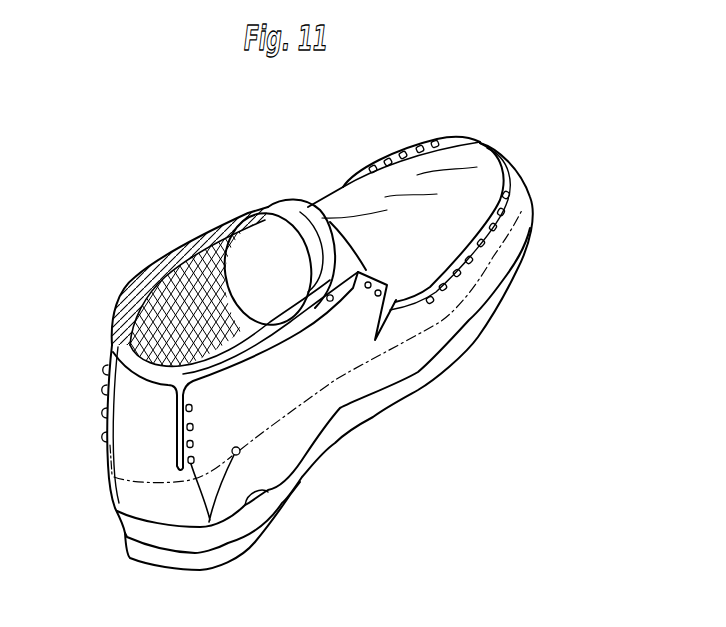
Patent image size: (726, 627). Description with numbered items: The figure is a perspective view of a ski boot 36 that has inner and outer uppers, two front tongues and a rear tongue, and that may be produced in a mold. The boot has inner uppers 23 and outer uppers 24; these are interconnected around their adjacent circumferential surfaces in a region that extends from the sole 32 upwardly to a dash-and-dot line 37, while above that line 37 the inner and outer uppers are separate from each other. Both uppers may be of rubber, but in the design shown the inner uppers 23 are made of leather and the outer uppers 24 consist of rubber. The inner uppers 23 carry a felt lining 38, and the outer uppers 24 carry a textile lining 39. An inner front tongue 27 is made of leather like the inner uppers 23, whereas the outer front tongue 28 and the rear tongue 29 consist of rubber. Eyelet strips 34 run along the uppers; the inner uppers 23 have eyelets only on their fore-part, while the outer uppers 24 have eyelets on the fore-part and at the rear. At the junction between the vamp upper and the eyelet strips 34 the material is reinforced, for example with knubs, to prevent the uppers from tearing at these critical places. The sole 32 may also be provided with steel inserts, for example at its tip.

The ski boot 36 is at (90, 213).
The felt lining 38 is at (186, 262).
The inner front tongue 27 is at (267, 223).
The outer uppers 24 is at (130, 287).
The textile lining 39 is at (128, 315).
The outer front tongue 28 is at (353, 263).
The eyelet strips 34 is at (500, 221).
The dash-and-dot line 37 is at (462, 300).
The sole 32 is at (442, 373).
The inner uppers 23 is at (258, 350).
The rear tongue 29 is at (132, 437).